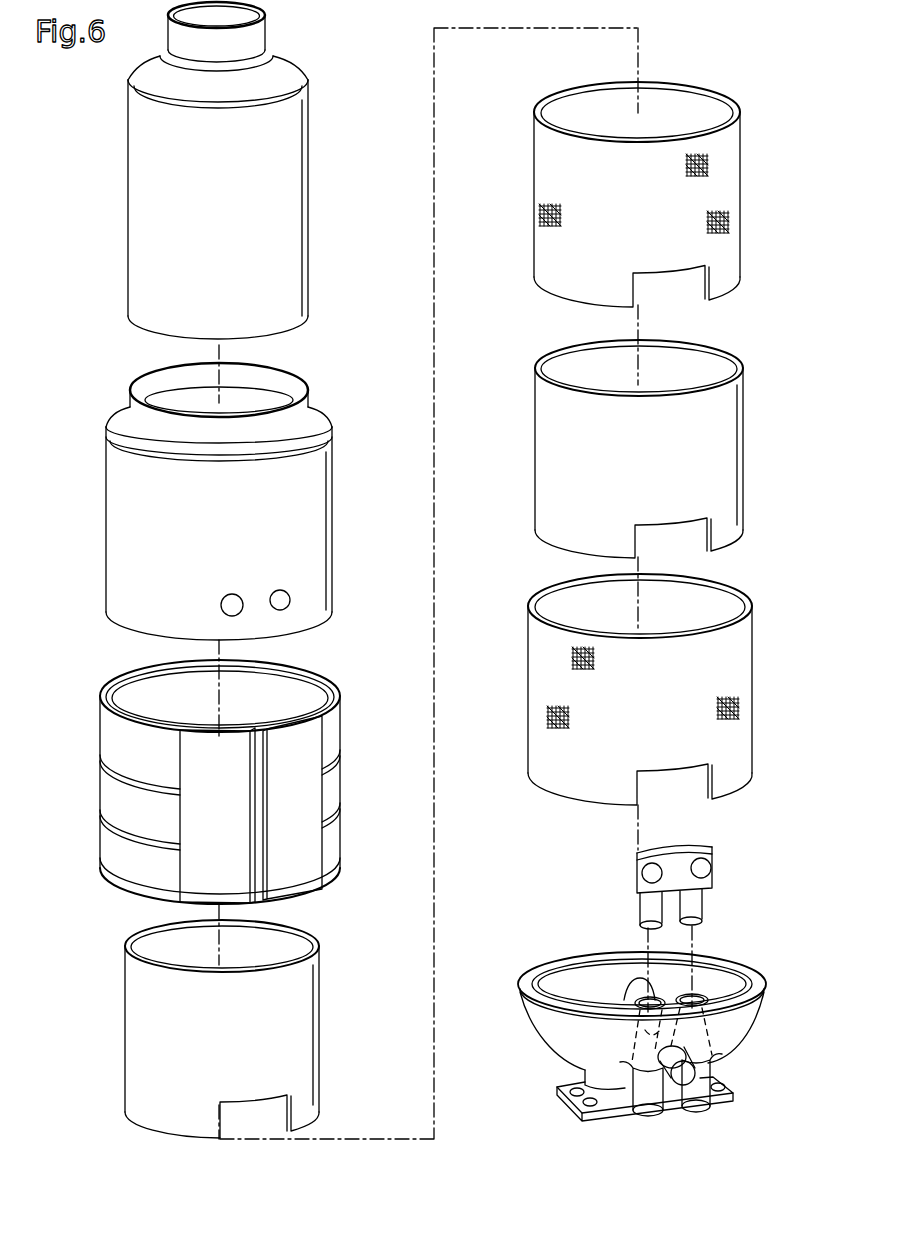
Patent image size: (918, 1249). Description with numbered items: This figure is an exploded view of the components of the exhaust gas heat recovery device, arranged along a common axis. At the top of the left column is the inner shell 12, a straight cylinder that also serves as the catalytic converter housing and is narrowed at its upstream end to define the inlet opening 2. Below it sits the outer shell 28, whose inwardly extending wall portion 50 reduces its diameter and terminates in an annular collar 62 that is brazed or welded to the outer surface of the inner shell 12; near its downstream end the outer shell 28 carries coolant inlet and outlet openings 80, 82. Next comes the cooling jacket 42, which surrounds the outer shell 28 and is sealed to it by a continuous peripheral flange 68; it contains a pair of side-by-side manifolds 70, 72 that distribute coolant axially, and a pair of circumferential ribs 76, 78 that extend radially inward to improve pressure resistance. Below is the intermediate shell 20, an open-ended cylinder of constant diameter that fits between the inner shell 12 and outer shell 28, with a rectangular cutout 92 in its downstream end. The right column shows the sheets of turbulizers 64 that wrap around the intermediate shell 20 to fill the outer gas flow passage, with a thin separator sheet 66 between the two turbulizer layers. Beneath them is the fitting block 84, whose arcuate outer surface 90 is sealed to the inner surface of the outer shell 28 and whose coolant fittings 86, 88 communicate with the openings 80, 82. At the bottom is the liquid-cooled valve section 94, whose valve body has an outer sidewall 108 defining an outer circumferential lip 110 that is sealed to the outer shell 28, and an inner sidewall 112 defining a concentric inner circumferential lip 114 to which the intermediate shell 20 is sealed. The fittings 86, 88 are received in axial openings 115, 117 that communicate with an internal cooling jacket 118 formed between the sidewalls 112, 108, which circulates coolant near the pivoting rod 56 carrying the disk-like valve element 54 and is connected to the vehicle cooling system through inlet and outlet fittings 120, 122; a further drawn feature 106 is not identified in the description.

The inlet opening 2 is at (263, 8).
The inner shell 12 is at (194, 170).
The intermediate shell 20 is at (231, 1029).
The outer shell 28 is at (106, 508).
The cooling jacket 42 is at (220, 782).
The inwardly extending wall portion 50 is at (217, 492).
The valve element 54 is at (645, 1010).
The pivoting rod 56 is at (668, 1096).
The collar 62 is at (133, 401).
The turbulizers 64 is at (720, 172).
The separator sheet 66 is at (728, 437).
The peripheral flange 68 is at (330, 683).
The manifold 70 is at (310, 793).
The manifold 72 is at (193, 857).
The circumferential rib 76 is at (100, 757).
The circumferential rib 78 is at (340, 810).
The coolant inlet opening 80 is at (283, 598).
The coolant outlet opening 82 is at (221, 606).
The fitting block 84 is at (676, 868).
The coolant fitting 86 is at (704, 903).
The coolant fitting 88 is at (640, 905).
The arcuate outer surface 90 is at (675, 850).
The rectangular cutout 92 is at (295, 1108).
The liquid-cooled valve section 94 is at (644, 1022).
The mounting plate 106 is at (735, 1090).
The outer sidewall 108 is at (545, 1045).
The outer circumferential lip 110 is at (740, 968).
The inner sidewall 112 is at (578, 965).
The inner circumferential lip 114 is at (525, 975).
The axial opening 115 is at (693, 997).
The axial opening 117 is at (648, 986).
The internal cooling jacket 118 is at (720, 1050).
The inlet fitting 120 is at (708, 1112).
The outlet fitting 122 is at (645, 1116).